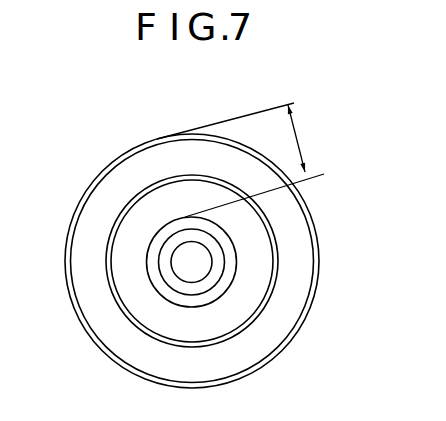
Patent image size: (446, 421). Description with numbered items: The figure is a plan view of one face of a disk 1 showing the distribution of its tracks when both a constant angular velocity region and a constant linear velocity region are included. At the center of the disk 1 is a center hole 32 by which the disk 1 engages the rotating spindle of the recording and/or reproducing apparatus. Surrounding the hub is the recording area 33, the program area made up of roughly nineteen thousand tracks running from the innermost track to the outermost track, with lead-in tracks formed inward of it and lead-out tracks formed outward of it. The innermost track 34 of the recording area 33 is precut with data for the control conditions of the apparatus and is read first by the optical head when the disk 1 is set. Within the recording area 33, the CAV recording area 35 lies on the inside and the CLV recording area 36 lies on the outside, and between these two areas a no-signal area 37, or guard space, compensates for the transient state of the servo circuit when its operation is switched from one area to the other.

The disk 1 is at (101, 170).
The center hole 32 is at (188, 258).
The recording area 33 is at (298, 137).
The innermost track 34 is at (220, 292).
The CAV recording area 35 is at (258, 231).
The CLV recording area 36 is at (300, 268).
The no-signal area 37 is at (272, 294).